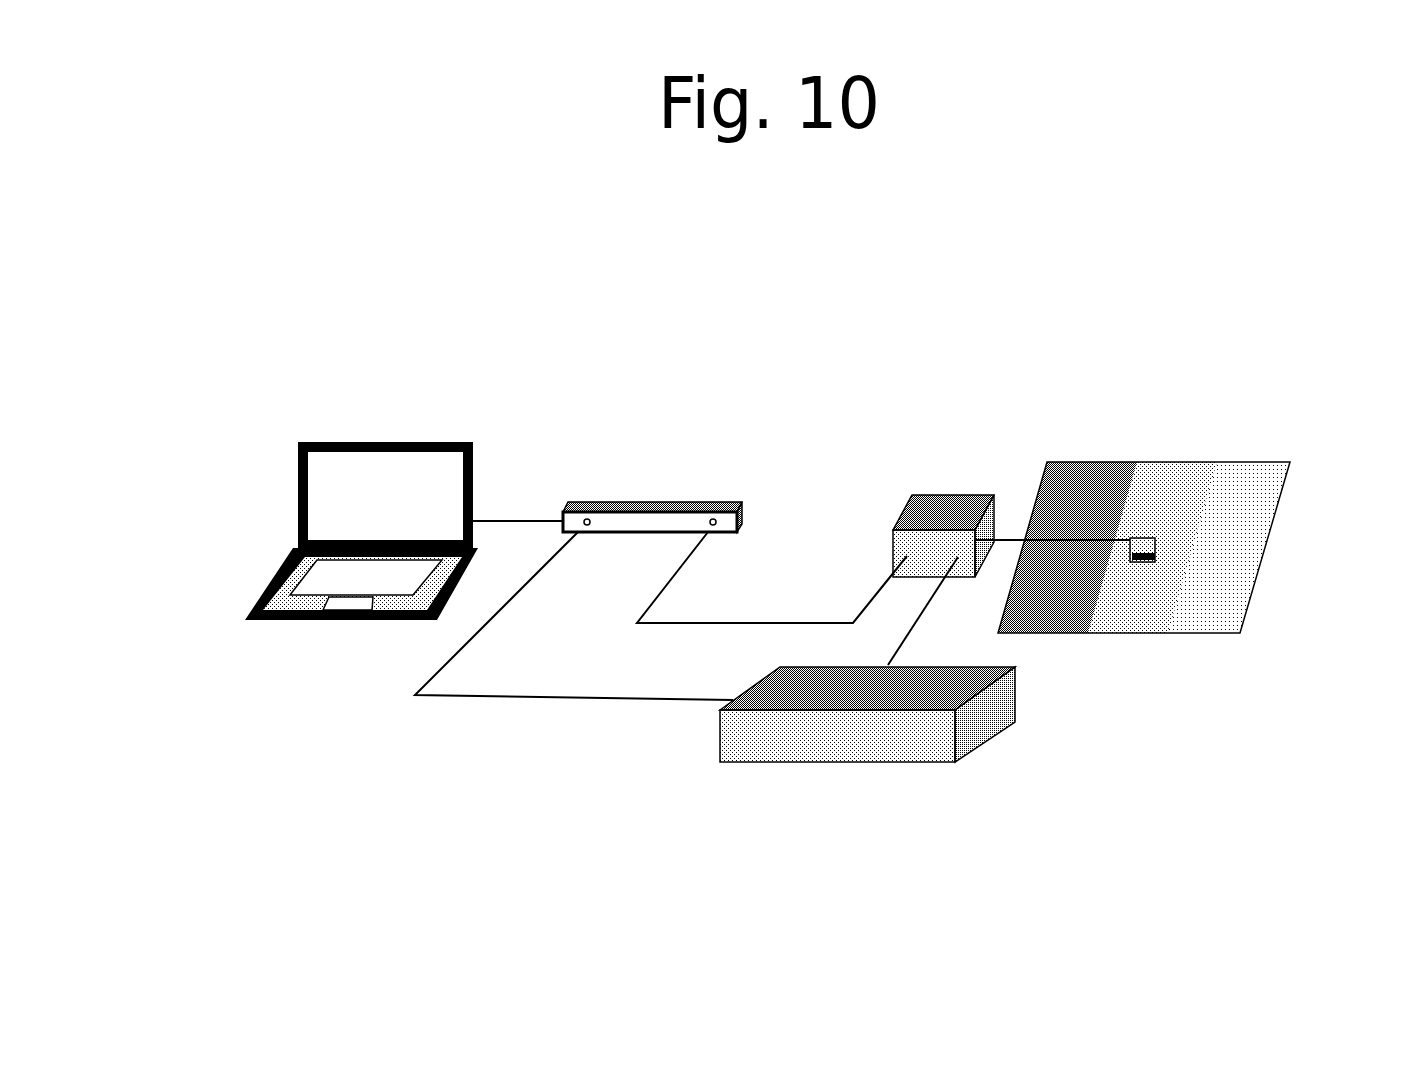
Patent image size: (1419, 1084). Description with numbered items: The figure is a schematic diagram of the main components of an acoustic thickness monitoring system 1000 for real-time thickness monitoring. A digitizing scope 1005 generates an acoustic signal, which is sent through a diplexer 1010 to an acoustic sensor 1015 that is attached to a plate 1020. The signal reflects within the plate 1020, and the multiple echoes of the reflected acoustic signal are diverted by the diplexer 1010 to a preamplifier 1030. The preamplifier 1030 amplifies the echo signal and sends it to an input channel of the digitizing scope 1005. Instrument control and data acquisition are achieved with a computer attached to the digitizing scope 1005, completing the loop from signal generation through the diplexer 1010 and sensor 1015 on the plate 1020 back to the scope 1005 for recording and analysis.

The acoustic thickness monitoring system 1000 is at (312, 362).
The digitizing scope 1005 is at (655, 453).
The diplexer 1010 is at (949, 452).
The acoustic sensor 1015 is at (1135, 538).
The plate 1020 is at (1167, 478).
The preamplifier 1030 is at (813, 778).